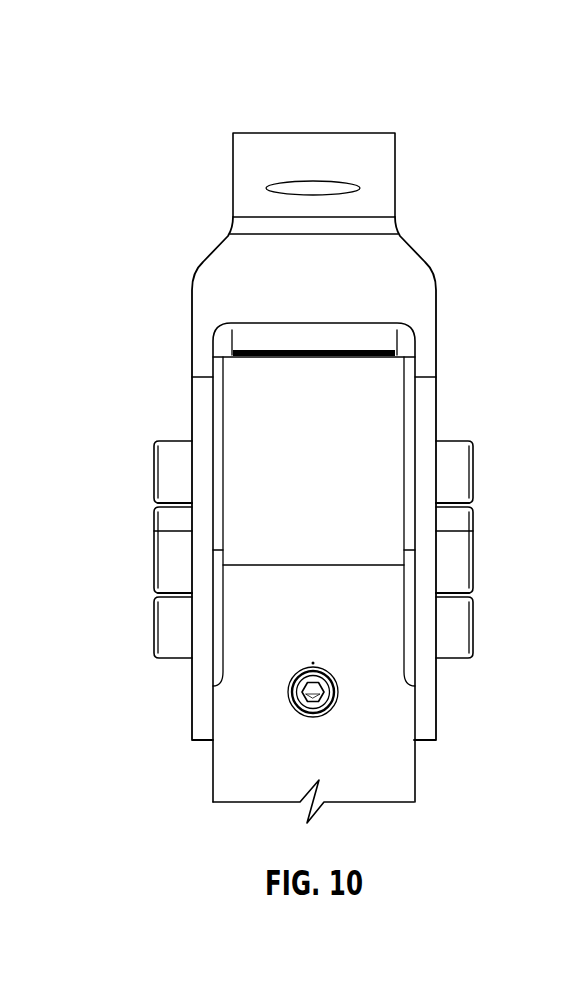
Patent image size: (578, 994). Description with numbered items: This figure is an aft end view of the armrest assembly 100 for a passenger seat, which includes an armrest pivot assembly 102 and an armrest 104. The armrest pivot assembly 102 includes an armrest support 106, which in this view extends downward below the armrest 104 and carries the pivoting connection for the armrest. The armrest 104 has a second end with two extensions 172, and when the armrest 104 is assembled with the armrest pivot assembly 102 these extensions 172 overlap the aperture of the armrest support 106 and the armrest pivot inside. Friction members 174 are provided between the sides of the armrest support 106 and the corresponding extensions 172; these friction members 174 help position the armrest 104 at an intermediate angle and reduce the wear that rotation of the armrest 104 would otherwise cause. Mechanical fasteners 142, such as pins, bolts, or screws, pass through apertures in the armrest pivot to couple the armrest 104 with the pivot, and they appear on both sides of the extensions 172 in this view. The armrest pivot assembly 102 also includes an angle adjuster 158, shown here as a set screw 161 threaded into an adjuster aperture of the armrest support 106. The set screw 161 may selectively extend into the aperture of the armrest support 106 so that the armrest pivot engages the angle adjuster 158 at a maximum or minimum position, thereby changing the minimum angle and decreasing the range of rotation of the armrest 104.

The armrest assembly 100 is at (277, 84).
The armrest pivot assembly 102 is at (171, 213).
The armrest 104 is at (252, 165).
The armrest support 106 is at (400, 768).
The mechanical fasteners 142 is at (170, 459).
The angle adjuster 158 is at (288, 687).
The set screw 161 is at (290, 696).
The extensions 172 is at (200, 390).
The friction members 174 is at (220, 496).